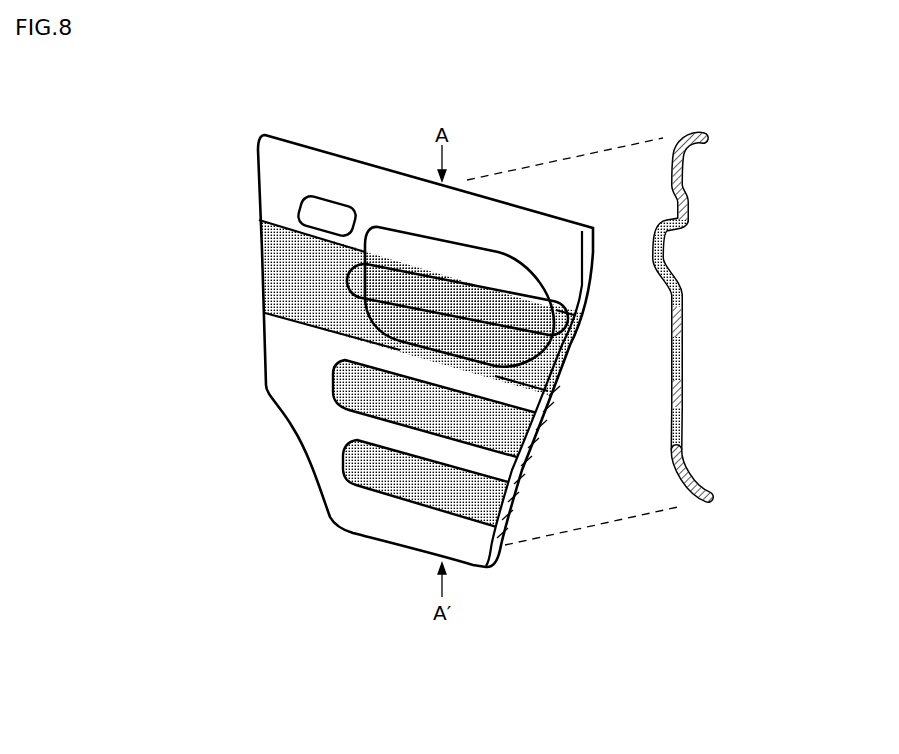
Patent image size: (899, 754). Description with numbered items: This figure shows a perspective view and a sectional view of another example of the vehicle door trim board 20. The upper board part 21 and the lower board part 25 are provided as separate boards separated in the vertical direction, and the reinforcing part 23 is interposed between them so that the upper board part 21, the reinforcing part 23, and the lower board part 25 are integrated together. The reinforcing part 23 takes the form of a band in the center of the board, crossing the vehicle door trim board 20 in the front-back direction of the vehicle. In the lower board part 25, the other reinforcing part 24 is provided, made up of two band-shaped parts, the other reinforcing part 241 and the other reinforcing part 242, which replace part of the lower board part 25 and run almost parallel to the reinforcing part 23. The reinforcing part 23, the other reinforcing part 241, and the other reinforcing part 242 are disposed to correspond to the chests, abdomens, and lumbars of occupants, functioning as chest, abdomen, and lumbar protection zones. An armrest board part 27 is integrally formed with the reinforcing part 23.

The vehicle door trim board 20 is at (237, 155).
The upper board part 21 is at (292, 160).
The reinforcing part 23 is at (277, 280).
The other reinforcing part 24 is at (628, 583).
The other reinforcing part 241 is at (670, 355).
The other reinforcing part 242 is at (670, 433).
The lower board part 25 is at (322, 445).
The armrest board part 27 is at (503, 313).